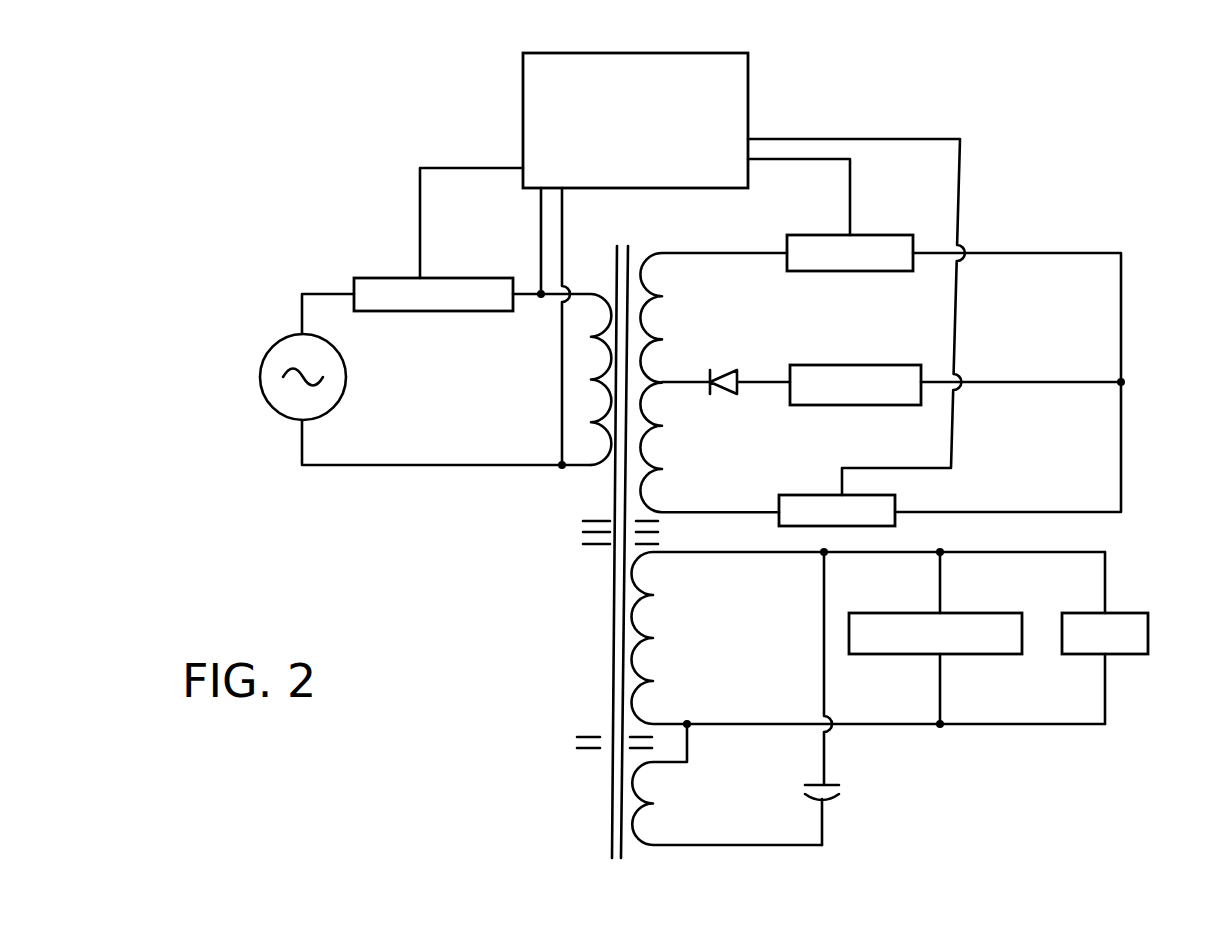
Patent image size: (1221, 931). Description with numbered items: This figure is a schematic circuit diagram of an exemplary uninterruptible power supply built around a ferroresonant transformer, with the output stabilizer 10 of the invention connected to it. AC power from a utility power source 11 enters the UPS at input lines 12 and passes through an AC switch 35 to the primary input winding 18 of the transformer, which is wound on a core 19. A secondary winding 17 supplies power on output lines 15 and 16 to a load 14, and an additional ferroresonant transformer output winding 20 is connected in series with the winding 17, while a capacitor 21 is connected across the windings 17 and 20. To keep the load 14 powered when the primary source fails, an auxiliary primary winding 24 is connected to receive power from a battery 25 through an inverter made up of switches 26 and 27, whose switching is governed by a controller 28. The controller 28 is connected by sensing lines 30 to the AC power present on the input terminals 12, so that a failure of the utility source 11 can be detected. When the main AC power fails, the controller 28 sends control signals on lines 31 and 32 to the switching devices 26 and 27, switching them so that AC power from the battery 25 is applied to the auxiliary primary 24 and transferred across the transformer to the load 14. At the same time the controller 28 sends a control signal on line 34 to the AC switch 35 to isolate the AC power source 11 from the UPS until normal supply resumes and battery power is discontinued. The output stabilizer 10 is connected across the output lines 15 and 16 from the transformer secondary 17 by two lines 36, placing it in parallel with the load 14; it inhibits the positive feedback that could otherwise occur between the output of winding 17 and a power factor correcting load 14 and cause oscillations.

The stabilizer 10 is at (983, 655).
The utility power source 11 is at (280, 417).
The input lines 12 is at (330, 292).
The load 14 is at (1130, 612).
The output line 15 is at (895, 550).
The output line 16 is at (877, 725).
The secondary winding 17 is at (647, 633).
The primary input winding 18 is at (605, 292).
The core 19 is at (610, 560).
The ferroresonant transformer output winding 20 is at (637, 778).
The capacitor 21 is at (810, 783).
The auxiliary primary winding 24 is at (658, 252).
The battery 25 is at (838, 406).
The switch 26 is at (873, 232).
The switch 27 is at (813, 493).
The controller 28 is at (748, 52).
The sensing lines 30 is at (562, 236).
The control signal line 31 is at (853, 192).
The control signal line 32 is at (953, 433).
The control signal line 34 is at (473, 165).
The AC switch 35 is at (442, 276).
The stabilizer lines 36 is at (937, 588).